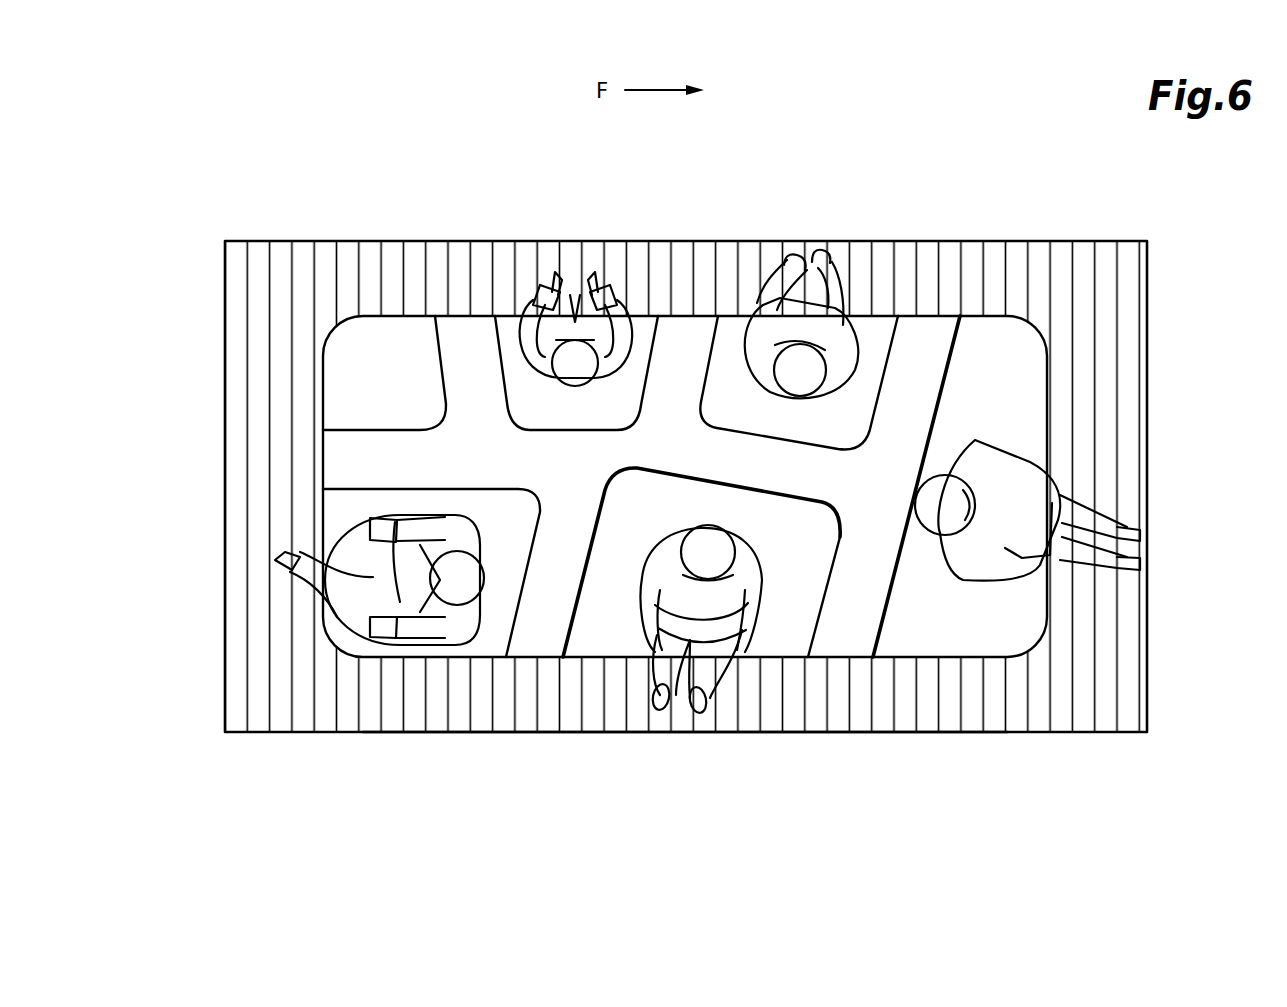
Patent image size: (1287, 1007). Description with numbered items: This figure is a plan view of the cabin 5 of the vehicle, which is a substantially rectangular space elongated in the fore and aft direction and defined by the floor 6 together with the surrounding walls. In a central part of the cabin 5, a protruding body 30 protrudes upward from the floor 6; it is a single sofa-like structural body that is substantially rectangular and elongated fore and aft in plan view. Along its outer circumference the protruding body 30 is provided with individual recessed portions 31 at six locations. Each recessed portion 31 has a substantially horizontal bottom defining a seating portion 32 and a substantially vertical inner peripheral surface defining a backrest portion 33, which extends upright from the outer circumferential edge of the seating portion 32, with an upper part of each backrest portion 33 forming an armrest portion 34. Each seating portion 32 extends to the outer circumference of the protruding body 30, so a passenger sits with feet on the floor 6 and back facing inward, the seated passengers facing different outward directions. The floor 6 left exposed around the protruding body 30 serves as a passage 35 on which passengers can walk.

The cabin 5 is at (858, 255).
The floor 6 is at (1046, 696).
The protruding body 30 is at (827, 644).
The recessed portion 31 is at (396, 328).
The seating portion 32 is at (361, 340).
The backrest portion 33 is at (445, 378).
The armrest portion 34 is at (582, 526).
The passage 35 is at (990, 710).